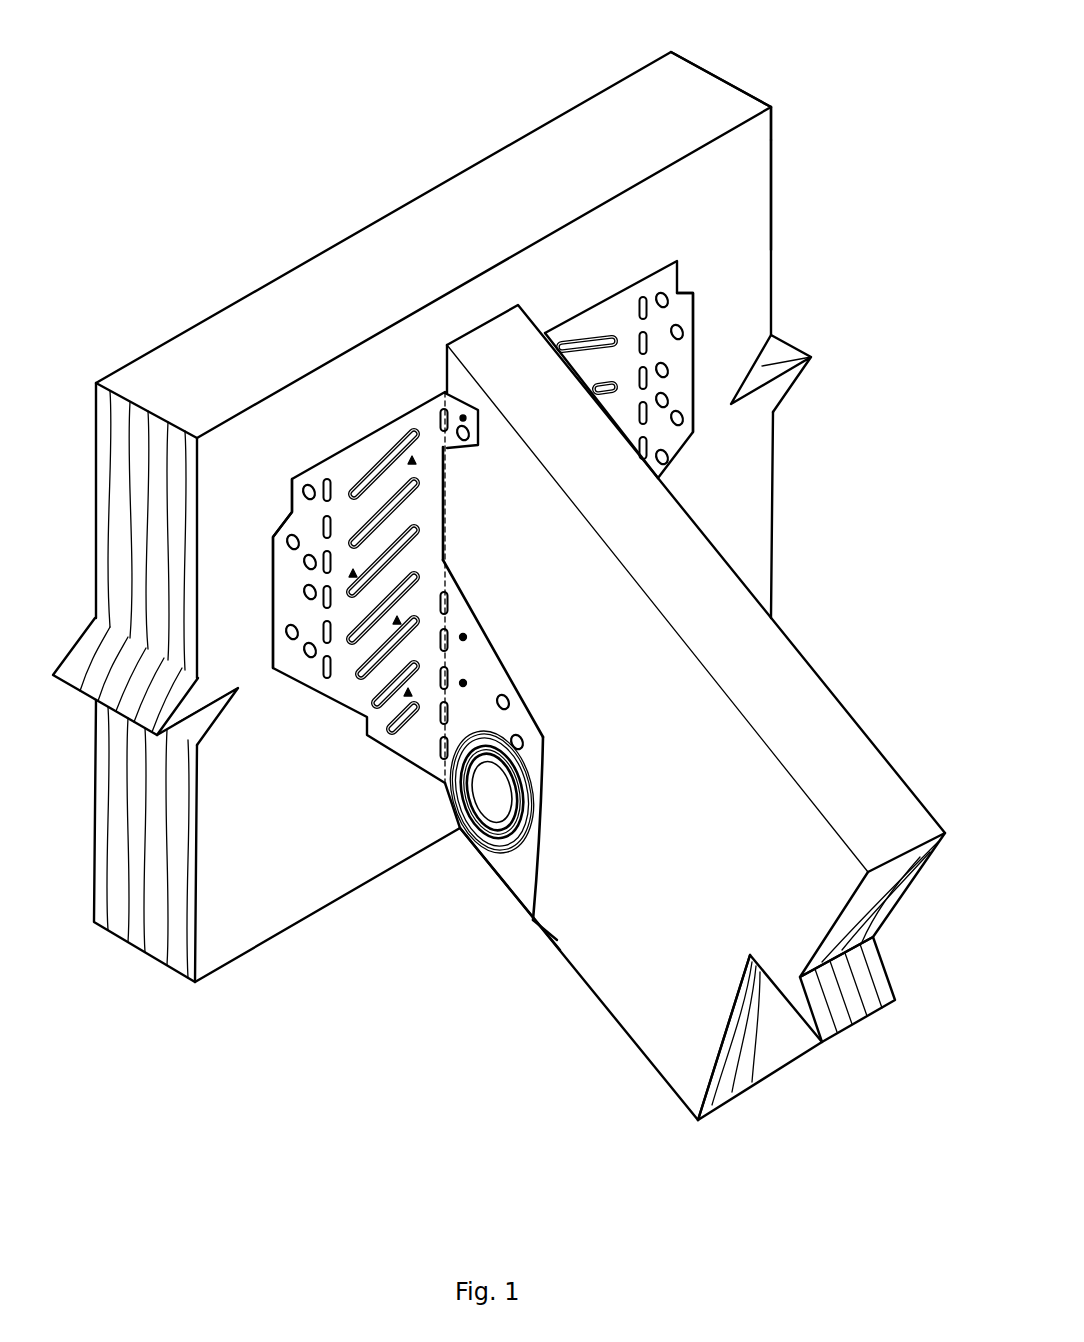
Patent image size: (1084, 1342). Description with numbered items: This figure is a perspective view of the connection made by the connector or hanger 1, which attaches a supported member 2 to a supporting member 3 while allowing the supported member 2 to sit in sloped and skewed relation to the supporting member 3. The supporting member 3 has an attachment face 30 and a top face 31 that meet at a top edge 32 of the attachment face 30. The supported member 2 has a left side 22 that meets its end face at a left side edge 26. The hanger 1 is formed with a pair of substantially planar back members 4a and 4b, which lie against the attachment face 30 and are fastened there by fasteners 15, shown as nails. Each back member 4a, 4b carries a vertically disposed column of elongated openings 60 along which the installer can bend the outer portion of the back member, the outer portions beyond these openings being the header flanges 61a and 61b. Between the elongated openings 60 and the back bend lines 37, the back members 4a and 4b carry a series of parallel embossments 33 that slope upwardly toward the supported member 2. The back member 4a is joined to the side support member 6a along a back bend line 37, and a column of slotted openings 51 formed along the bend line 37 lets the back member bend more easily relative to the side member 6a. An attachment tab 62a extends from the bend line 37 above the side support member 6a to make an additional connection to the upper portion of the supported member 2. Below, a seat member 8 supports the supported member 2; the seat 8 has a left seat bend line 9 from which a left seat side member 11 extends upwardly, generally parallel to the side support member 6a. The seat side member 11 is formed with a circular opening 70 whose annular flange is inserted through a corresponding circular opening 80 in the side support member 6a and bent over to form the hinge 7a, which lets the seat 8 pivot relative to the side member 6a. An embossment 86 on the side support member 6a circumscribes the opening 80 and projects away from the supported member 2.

The connector or hanger 1 is at (502, 580).
The supported member 2 is at (696, 728).
The supporting member 3 is at (585, 97).
The back member 4a is at (318, 466).
The back member 4b is at (587, 310).
The side support member 6a is at (526, 686).
The hinge 7a is at (520, 810).
The seat member 8 is at (512, 907).
The left seat bend line 9 is at (490, 872).
The left seat side member 11 is at (540, 885).
The fasteners 15 is at (683, 333).
The left side of supported member 22 is at (706, 1090).
The left side edge of end face 26 is at (446, 358).
The attachment face 30 is at (755, 191).
The top face of supporting member 31 is at (725, 101).
The top edge of attachment face 32 is at (775, 108).
The embossments 33 is at (596, 346).
The back bend lines 37 is at (457, 583).
The slotted openings 51 is at (465, 634).
The elongated openings 60 is at (643, 302).
The header flange 61a is at (294, 514).
The header flange 61b is at (695, 301).
The attachment tab 62a is at (462, 400).
The circular opening 70 is at (496, 781).
The circular opening 80 is at (460, 830).
The embossment 86 is at (540, 849).